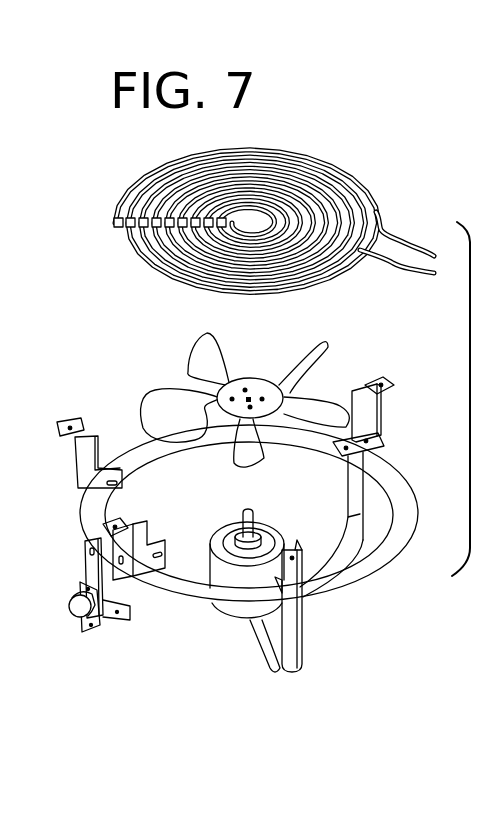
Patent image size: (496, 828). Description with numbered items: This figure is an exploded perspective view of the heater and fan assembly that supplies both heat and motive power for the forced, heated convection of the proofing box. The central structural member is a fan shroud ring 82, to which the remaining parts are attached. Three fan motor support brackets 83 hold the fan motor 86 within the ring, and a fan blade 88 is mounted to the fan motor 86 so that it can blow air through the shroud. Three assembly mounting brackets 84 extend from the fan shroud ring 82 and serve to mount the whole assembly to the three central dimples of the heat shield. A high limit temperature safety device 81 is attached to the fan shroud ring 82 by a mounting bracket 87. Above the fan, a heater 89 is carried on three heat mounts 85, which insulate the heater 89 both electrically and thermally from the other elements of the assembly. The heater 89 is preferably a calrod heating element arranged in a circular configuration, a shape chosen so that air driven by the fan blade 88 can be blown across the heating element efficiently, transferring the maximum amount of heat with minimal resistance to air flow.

The high limit temperature safety device 81 is at (80, 614).
The fan shroud ring 82 is at (364, 576).
The fan motor support bracket 83 is at (297, 636).
The assembly mounting bracket 84 is at (383, 383).
The heat mount 85 is at (280, 302).
The fan motor 86 is at (283, 527).
The mounting bracket 87 is at (87, 562).
The fan blade 88 is at (150, 388).
The heater 89 is at (378, 212).